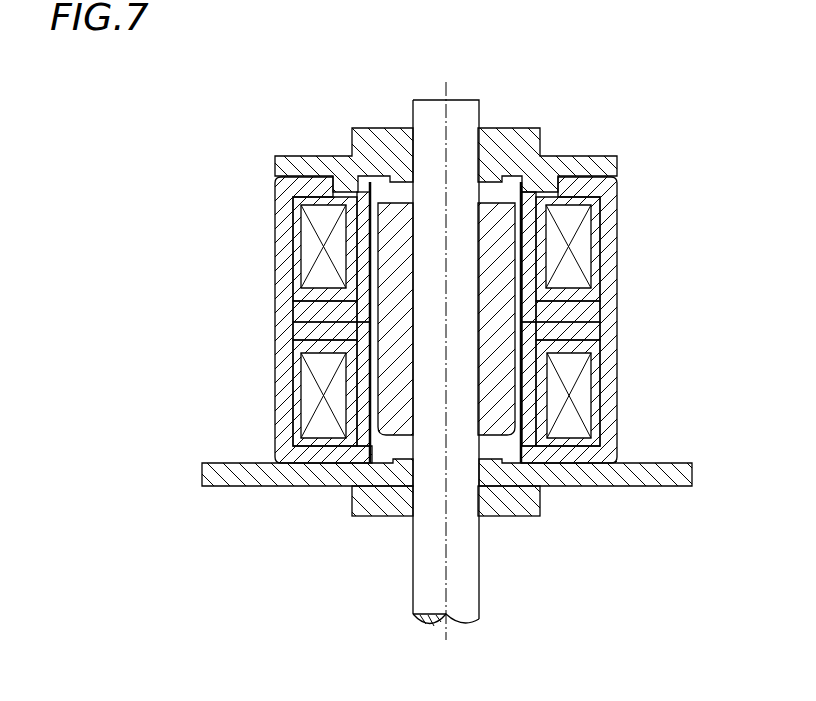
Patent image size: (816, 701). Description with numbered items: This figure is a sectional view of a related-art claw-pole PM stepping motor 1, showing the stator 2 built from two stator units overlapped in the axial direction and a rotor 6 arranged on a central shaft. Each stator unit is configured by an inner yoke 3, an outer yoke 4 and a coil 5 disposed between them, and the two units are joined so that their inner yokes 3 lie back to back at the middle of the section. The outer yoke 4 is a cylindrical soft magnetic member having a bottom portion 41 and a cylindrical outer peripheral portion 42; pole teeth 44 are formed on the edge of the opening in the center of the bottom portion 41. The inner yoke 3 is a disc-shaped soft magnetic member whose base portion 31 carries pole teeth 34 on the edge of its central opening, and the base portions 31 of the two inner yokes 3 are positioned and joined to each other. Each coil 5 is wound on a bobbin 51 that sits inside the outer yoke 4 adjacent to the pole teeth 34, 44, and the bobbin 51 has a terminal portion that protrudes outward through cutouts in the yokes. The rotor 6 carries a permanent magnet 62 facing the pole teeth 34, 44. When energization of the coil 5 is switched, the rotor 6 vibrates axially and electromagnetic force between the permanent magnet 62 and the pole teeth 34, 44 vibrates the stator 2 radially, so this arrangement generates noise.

The claw-pole PM stepping motor 1 is at (622, 116).
The stator 2 is at (268, 189).
The inner yoke 3 is at (593, 290).
The outer yoke 4 is at (610, 222).
The coil 5 is at (606, 397).
The rotor 6 is at (404, 447).
The base portion 31 is at (325, 316).
The pole teeth 34 is at (362, 250).
The bottom portion 41 is at (577, 457).
The outer peripheral portion 42 is at (283, 253).
The pole teeth 44 is at (363, 400).
The bobbin 51 is at (296, 443).
The permanent magnet 62 is at (548, 355).